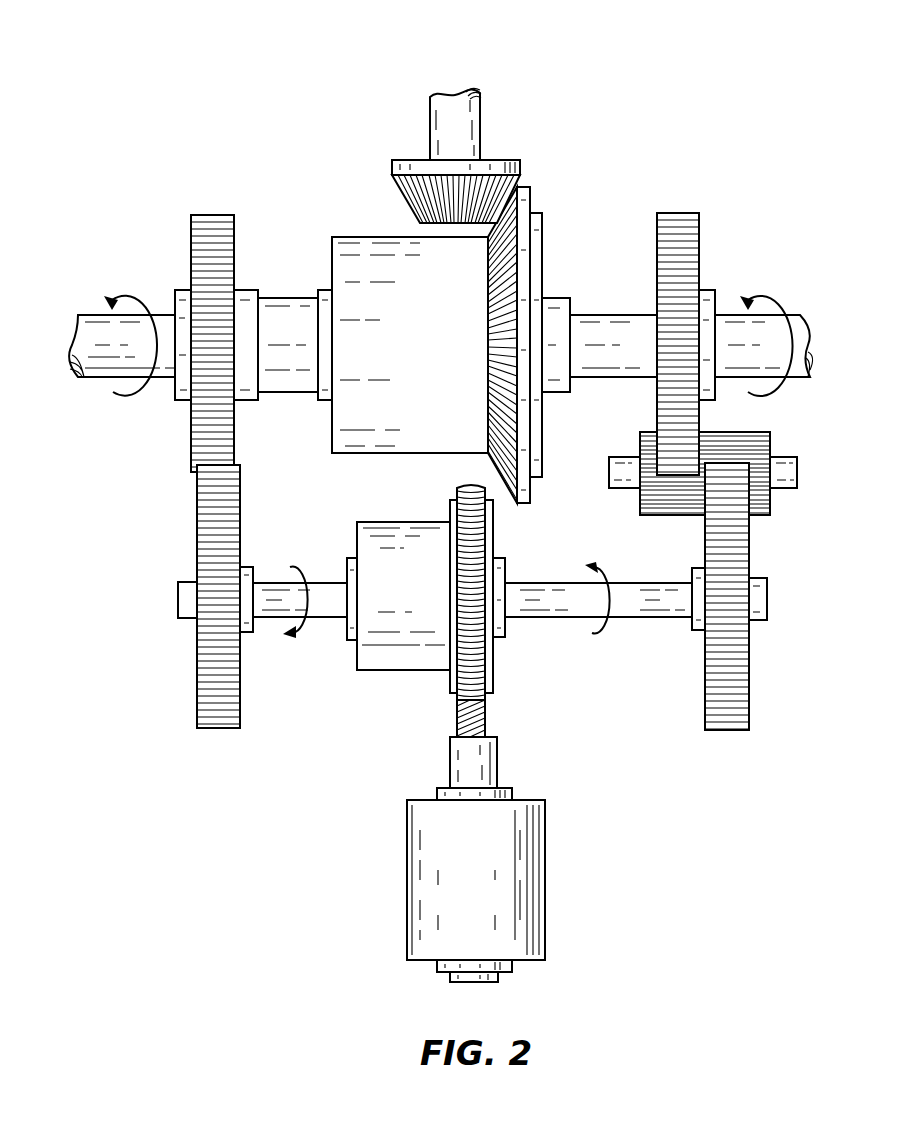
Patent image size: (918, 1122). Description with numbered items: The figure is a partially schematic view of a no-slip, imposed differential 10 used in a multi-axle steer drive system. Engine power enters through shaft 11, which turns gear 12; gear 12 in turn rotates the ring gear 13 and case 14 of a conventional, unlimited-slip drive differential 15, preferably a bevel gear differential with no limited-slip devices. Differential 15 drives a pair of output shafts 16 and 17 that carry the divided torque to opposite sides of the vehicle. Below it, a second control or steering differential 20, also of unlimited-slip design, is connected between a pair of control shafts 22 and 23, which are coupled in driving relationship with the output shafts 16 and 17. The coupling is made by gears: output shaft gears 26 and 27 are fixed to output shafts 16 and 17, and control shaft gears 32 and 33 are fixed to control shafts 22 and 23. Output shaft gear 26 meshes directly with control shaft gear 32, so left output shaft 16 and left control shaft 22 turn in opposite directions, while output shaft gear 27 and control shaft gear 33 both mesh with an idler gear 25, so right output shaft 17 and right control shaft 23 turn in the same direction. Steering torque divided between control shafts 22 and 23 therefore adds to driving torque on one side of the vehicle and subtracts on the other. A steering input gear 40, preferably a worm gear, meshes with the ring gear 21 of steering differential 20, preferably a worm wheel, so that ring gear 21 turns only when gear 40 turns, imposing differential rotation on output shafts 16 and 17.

The drive mechanism 10 is at (605, 50).
The shaft 11 is at (480, 112).
The gear 12 is at (410, 201).
The ring gear 13 is at (504, 494).
The case 14 is at (356, 448).
The differential 15 is at (313, 191).
The output shaft 16 is at (243, 318).
The output shaft 17 is at (608, 318).
The steering differential 20 is at (394, 679).
The ring gear 21 is at (488, 651).
The control shaft 22 is at (330, 616).
The control shaft 23 is at (653, 614).
The idler gear 25 is at (665, 514).
The output shaft gear 26 is at (193, 247).
The output shaft gear 27 is at (700, 238).
The control shaft gear 32 is at (196, 650).
The control shaft gear 33 is at (705, 700).
The steering input gear 40 is at (490, 714).